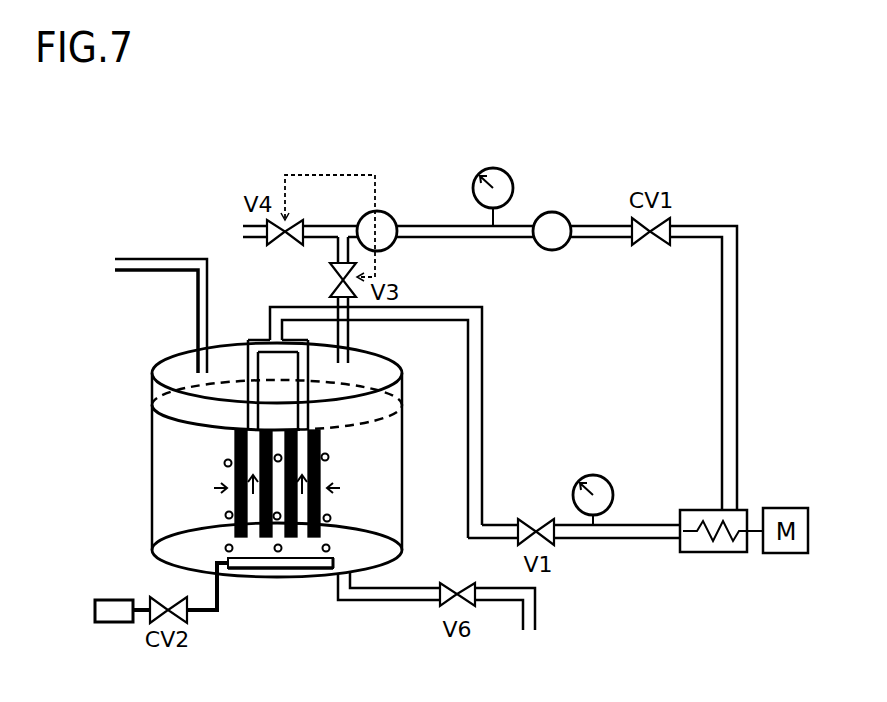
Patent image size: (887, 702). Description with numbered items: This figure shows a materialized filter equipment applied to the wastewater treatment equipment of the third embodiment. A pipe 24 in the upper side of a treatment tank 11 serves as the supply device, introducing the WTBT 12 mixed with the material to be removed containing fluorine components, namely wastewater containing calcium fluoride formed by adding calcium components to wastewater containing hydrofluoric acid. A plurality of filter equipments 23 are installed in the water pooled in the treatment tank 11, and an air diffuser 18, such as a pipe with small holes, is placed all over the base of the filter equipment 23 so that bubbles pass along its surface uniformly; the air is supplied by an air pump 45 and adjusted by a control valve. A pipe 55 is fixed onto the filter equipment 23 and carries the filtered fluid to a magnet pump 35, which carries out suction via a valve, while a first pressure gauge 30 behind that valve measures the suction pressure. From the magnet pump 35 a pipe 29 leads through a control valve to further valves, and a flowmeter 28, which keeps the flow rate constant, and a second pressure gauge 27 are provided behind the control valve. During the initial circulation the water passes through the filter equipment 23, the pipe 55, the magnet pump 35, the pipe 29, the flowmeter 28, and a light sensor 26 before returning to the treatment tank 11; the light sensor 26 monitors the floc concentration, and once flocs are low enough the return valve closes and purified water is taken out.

The treatment tank 11 is at (272, 571).
The WTBT 12 is at (177, 513).
The air diffuser 18 is at (247, 563).
The filter equipment 23 is at (305, 497).
The pipe 24 is at (138, 263).
The light sensor 26 is at (390, 214).
The second pressure gauge 27 is at (512, 181).
The flowmeter 28 is at (556, 212).
The pipe 29 is at (698, 226).
The first pressure gauge 30 is at (614, 487).
The magnet pump 35 is at (700, 553).
The air pump 45 is at (122, 612).
The pipe 55 is at (270, 327).